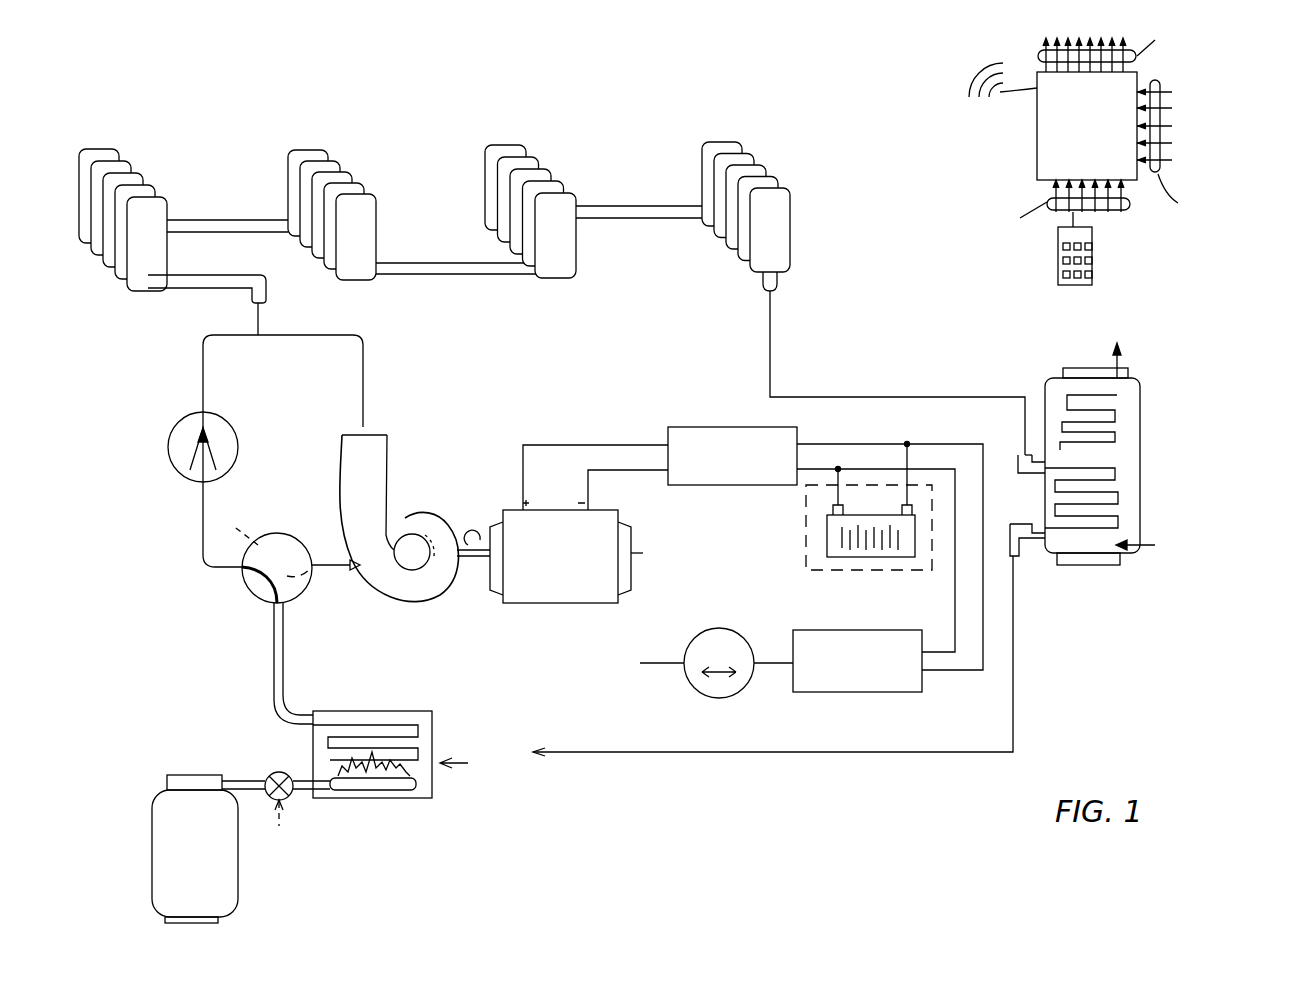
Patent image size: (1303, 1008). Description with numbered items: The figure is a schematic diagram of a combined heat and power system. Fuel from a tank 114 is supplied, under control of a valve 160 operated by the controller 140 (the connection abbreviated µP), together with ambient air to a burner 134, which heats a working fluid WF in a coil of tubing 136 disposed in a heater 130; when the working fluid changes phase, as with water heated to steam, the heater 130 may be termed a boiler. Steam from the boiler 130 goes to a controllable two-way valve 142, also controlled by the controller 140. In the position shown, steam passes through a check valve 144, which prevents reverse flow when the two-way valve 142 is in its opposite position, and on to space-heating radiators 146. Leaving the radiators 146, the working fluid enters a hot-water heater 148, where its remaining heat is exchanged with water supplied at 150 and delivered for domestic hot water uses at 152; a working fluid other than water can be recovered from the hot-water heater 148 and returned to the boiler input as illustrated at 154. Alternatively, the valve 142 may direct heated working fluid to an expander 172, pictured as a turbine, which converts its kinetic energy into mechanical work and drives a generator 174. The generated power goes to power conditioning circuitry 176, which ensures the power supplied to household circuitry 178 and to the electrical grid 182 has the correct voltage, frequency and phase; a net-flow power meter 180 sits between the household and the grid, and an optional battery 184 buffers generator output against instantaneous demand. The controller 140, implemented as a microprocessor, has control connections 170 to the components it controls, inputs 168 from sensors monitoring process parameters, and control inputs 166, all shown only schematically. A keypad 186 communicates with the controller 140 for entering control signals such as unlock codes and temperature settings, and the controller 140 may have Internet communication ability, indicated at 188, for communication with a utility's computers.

The tank 114 is at (152, 792).
The heater 130 is at (442, 808).
The burner 134 is at (370, 790).
The coil of tubing 136 is at (400, 722).
The controller 140 is at (1037, 152).
The controllable two-way valve 142 is at (276, 533).
The check valve 144 is at (168, 450).
The space-heating radiators 146 is at (552, 298).
The hot-water heater 148 is at (1145, 437).
The water supply 150 is at (1128, 497).
The domestic hot water output 152 is at (1088, 345).
The working fluid return 154 is at (583, 752).
The valve 160 is at (283, 773).
The control inputs 166 is at (1130, 212).
The sensor inputs 168 is at (1162, 160).
The control connections 170 is at (1120, 36).
The expander 172 is at (380, 500).
The generator 174 is at (592, 524).
The power conditioning circuitry 176 is at (750, 490).
The household circuitry 178 is at (853, 628).
The net-flow power meter 180 is at (710, 622).
The electrical grid 182 is at (608, 645).
The battery 184 is at (822, 545).
The keypad 186 is at (1055, 278).
The Internet communication ability 188 is at (985, 48).